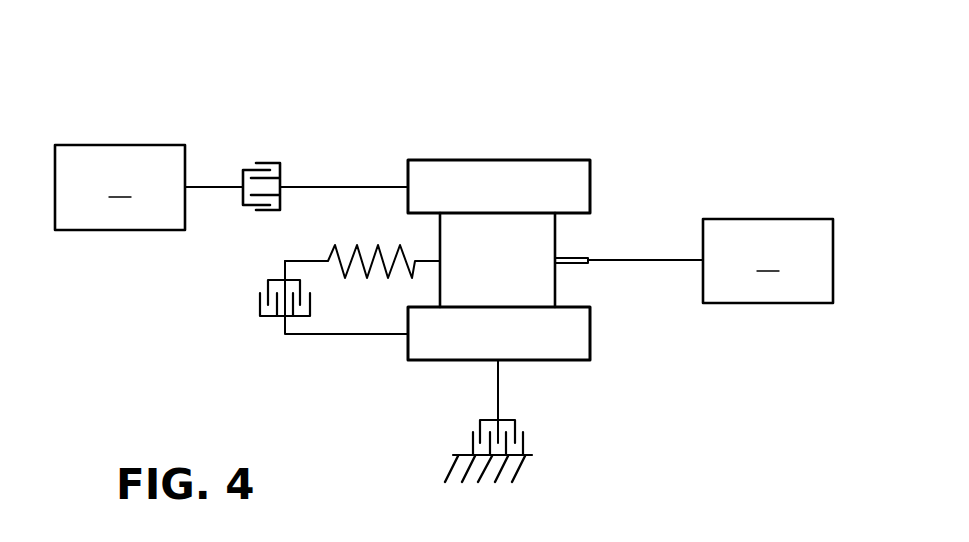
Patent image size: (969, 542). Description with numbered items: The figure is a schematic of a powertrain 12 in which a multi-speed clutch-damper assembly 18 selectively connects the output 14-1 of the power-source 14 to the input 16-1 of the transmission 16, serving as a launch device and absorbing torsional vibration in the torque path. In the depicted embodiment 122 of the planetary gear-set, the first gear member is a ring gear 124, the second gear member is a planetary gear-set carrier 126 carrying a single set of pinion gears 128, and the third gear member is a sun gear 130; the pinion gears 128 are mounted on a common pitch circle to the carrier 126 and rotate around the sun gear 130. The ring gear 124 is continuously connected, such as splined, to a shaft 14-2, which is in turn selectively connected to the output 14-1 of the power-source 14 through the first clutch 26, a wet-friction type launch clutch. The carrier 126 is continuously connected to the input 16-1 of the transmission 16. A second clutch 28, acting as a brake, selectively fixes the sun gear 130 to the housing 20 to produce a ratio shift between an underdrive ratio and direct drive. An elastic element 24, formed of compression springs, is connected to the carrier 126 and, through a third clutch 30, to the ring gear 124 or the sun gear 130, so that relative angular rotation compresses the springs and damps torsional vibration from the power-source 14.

The powertrain 12 is at (106, 64).
The power-source 14 is at (120, 187).
The output of the power-source 14-1 is at (221, 186).
The shaft 14-2 is at (331, 186).
The transmission 16 is at (768, 261).
The input of the transmission 16-1 is at (668, 259).
The clutch-damper assembly 18 is at (552, 98).
The housing 20 is at (462, 455).
The elastic element 24 is at (357, 250).
The first clutch 26 is at (284, 170).
The second clutch 28 is at (489, 418).
The third clutch 30 is at (269, 318).
The embodiment of the planetary gear-set 122 is at (626, 355).
The ring gear 124 is at (500, 159).
The planetary gear-set carrier 126 is at (582, 266).
The pinion gears 128 is at (558, 237).
The sun gear 130 is at (556, 362).